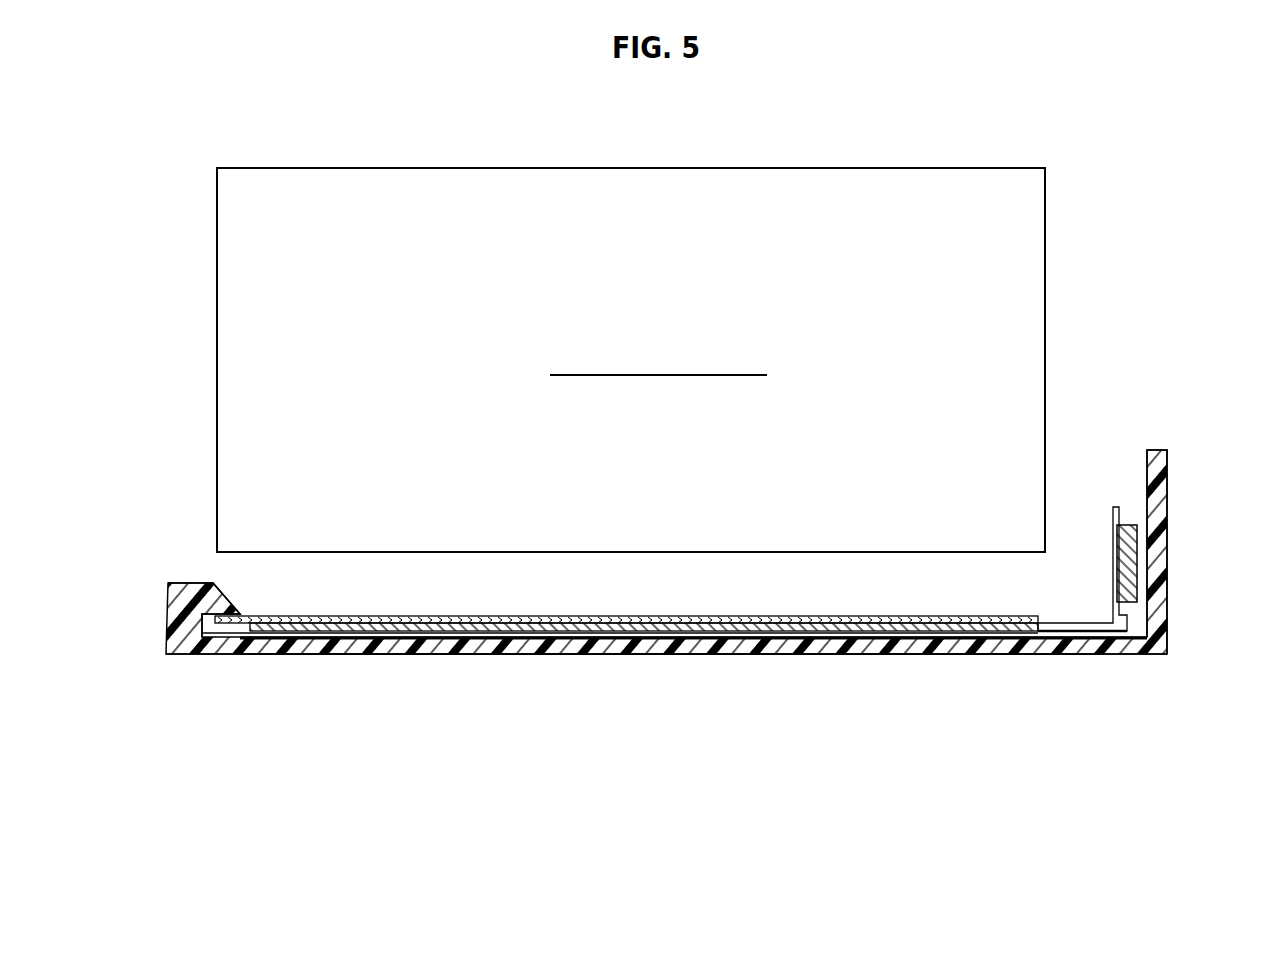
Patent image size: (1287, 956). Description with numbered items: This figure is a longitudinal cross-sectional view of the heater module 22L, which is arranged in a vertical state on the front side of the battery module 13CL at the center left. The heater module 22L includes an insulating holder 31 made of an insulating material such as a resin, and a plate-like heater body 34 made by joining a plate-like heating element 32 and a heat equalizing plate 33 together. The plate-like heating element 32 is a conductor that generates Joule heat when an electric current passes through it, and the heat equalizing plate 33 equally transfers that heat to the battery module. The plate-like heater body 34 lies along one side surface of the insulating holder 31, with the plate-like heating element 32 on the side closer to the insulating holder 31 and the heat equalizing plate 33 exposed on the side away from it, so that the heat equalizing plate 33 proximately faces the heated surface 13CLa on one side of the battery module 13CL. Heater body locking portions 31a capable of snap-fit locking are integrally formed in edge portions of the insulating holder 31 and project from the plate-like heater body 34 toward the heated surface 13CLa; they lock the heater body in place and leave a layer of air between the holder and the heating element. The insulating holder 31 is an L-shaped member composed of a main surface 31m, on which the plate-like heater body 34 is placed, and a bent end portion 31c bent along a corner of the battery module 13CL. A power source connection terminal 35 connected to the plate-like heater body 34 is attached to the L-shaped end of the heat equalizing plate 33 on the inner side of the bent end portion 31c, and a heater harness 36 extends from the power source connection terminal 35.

The battery module 13CL is at (1048, 353).
The heated surface 13CLa is at (968, 552).
The heater module 22L is at (957, 662).
The insulating holder 31 is at (833, 656).
The heater body locking portion 31a is at (222, 598).
The bent end portion 31c is at (1168, 567).
The main surface 31m is at (695, 655).
The plate-like heating element 32 is at (592, 624).
The heat equalizing plate 33 is at (620, 610).
The plate-like heater body 34 is at (620, 595).
The power source connection terminal 35 is at (1125, 540).
The heater harness 36 is at (1117, 630).